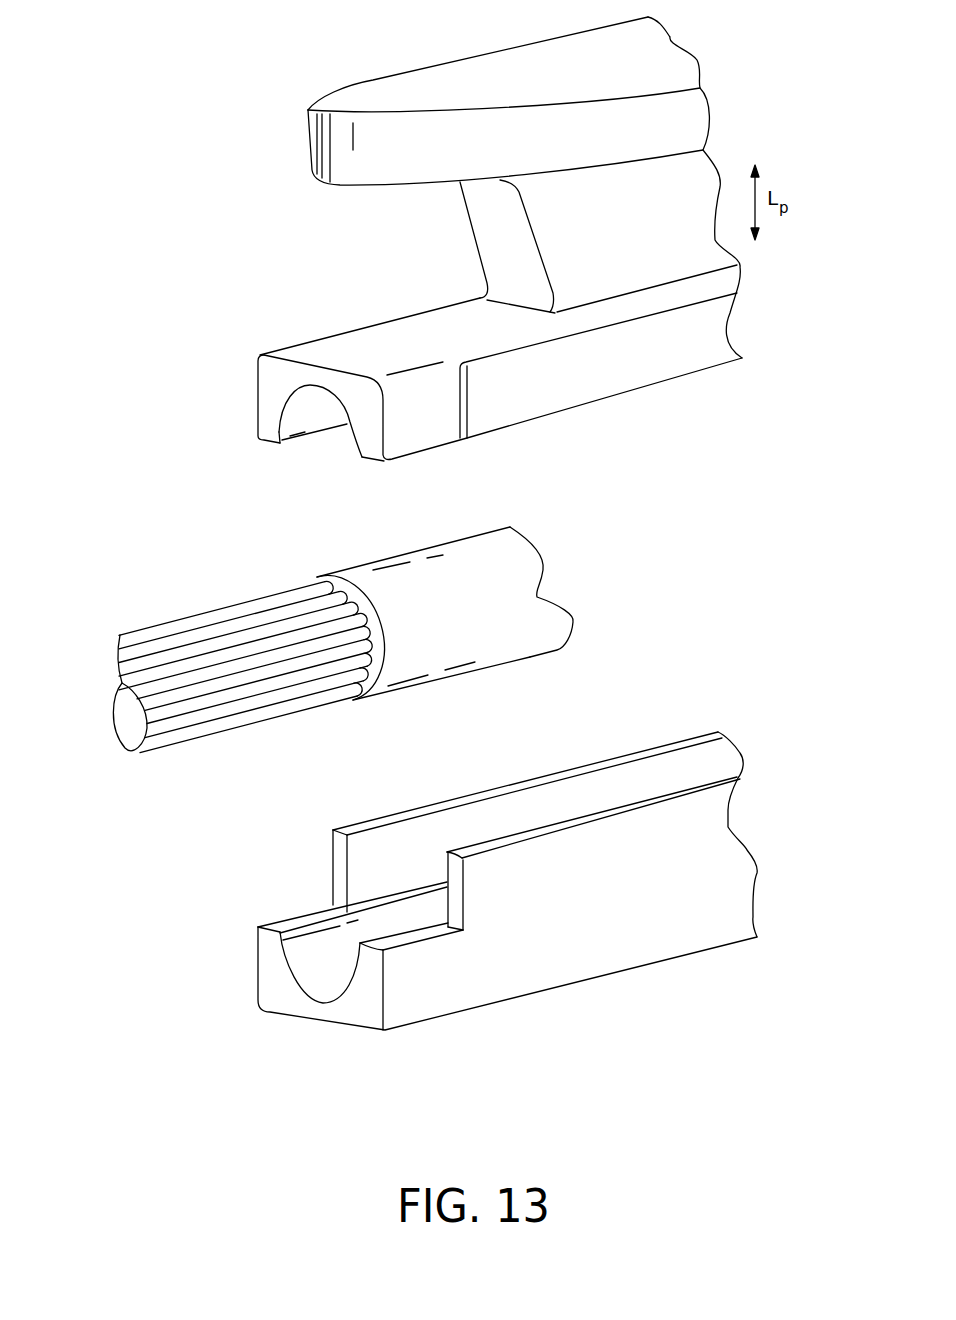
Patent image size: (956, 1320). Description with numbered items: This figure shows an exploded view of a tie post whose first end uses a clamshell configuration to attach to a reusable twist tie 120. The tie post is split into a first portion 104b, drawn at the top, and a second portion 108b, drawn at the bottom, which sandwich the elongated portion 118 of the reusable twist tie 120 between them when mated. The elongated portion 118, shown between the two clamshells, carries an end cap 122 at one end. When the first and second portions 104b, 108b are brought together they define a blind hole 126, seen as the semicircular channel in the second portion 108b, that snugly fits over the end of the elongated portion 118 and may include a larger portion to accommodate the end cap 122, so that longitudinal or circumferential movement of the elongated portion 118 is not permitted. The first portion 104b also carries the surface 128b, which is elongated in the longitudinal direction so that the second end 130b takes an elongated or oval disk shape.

The first portion 104b is at (277, 352).
The second end 130b is at (372, 75).
The surface 128b is at (340, 185).
The reusable twist tie 120 is at (327, 618).
The elongated portion 118 is at (208, 613).
The end cap 122 is at (480, 532).
The second portion 108b is at (502, 908).
The blind hole 126 is at (330, 965).